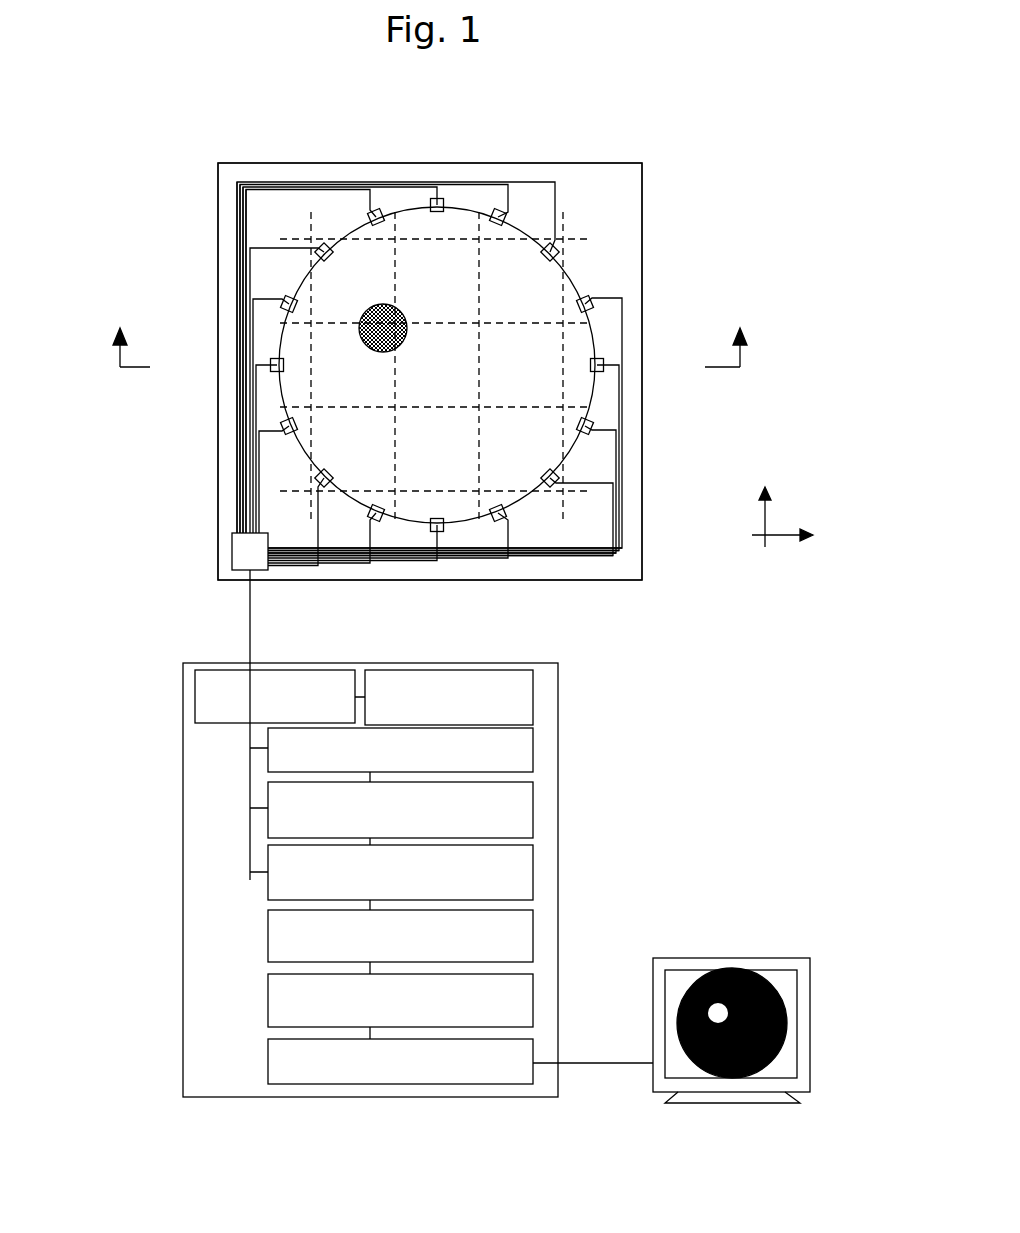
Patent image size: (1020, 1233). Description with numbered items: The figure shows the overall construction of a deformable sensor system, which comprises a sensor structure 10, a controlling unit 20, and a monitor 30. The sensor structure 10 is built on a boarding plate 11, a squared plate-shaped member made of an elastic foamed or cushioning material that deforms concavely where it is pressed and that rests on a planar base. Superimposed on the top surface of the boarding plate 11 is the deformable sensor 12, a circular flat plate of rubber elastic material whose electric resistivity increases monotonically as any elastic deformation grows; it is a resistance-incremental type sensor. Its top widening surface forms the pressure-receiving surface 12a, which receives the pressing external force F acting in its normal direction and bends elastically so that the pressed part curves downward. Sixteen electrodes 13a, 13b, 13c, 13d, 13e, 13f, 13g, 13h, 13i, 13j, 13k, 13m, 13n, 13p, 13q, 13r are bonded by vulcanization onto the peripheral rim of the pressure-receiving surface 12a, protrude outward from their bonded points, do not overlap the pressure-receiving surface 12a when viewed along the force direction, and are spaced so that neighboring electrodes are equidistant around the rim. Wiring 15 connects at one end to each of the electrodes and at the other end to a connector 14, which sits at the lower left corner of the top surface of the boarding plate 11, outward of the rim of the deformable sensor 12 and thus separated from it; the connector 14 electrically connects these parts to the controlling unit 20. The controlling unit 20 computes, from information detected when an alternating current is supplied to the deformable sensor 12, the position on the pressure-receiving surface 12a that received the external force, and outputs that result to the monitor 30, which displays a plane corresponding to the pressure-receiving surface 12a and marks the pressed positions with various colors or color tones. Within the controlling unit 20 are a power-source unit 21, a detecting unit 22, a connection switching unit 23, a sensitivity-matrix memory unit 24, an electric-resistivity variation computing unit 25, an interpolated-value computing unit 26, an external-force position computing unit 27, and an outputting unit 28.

The sensor structure 10 is at (668, 148).
The boarding plate 11 is at (226, 200).
The deformable sensor 12 is at (365, 258).
The pressure-receiving surface 12a is at (345, 262).
The electrode 13a is at (440, 199).
The electrode 13b is at (504, 211).
The electrode 13c is at (558, 245).
The electrode 13d is at (593, 298).
The electrode 13e is at (607, 362).
The electrode 13f is at (592, 430).
The electrode 13g is at (560, 483).
The electrode 13h is at (505, 521).
The electrode 13i is at (442, 531).
The electrode 13j is at (378, 521).
The electrode 13k is at (327, 488).
The electrode 13m is at (281, 427).
The electrode 13n is at (269, 362).
The electrode 13p is at (282, 300).
The electrode 13q is at (317, 247).
The electrode 13r is at (370, 212).
The connector 14 is at (242, 553).
The wiring 15 is at (237, 497).
The controlling unit 20 is at (303, 865).
The power-source unit 21 is at (535, 697).
The detecting unit 22 is at (535, 745).
The connection switching unit 23 is at (318, 668).
The sensitivity-matrix memory unit 24 is at (535, 805).
The electric-resistivity variation computing unit 25 is at (535, 865).
The interpolated-value computing unit 26 is at (535, 925).
The external-force position computing unit 27 is at (535, 985).
The outputting unit 28 is at (535, 1040).
The monitor 30 is at (757, 958).